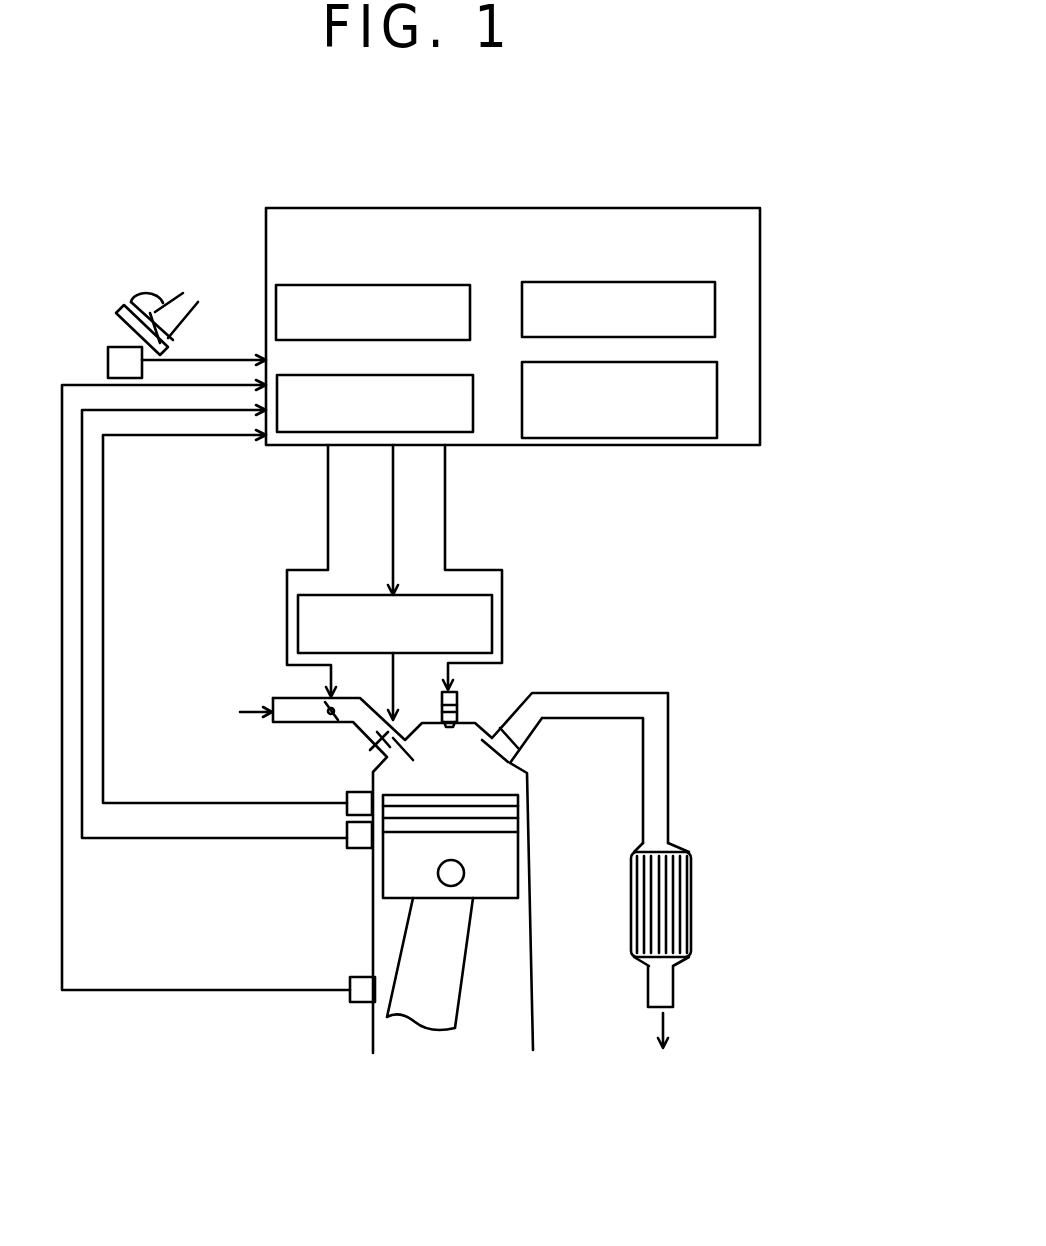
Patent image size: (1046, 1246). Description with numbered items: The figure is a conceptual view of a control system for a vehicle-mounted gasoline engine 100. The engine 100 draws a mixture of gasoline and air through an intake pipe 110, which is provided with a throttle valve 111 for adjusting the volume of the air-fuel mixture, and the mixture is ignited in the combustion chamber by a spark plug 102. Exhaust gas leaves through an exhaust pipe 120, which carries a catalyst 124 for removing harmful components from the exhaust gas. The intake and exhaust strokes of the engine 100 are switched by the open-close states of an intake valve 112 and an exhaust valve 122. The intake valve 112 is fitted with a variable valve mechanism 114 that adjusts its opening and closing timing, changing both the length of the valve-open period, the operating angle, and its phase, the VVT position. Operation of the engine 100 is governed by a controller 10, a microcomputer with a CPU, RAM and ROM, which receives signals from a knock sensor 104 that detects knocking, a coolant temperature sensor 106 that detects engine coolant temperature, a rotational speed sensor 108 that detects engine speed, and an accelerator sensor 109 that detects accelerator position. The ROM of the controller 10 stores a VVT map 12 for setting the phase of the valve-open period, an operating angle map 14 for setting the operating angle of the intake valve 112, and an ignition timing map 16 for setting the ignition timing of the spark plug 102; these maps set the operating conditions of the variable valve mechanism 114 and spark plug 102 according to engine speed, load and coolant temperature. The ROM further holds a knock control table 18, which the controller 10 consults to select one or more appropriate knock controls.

The controller 10 is at (761, 318).
The VVT map 12 is at (380, 285).
The operating angle map 14 is at (621, 282).
The ignition timing map 16 is at (413, 375).
The knock control table 18 is at (712, 362).
The gasoline engine 100 is at (383, 1072).
The spark plug 102 is at (458, 700).
The knock sensor 104 is at (347, 808).
The coolant temperature sensor 106 is at (358, 848).
The rotational speed sensor 108 is at (350, 980).
The accelerator sensor 109 is at (110, 347).
The intake pipe 110 is at (288, 698).
The throttle valve 111 is at (315, 723).
The intake valve 112 is at (377, 747).
The variable valve mechanism 114 is at (343, 595).
The exhaust pipe 120 is at (588, 722).
The exhaust valve 122 is at (515, 750).
The catalyst 124 is at (631, 905).